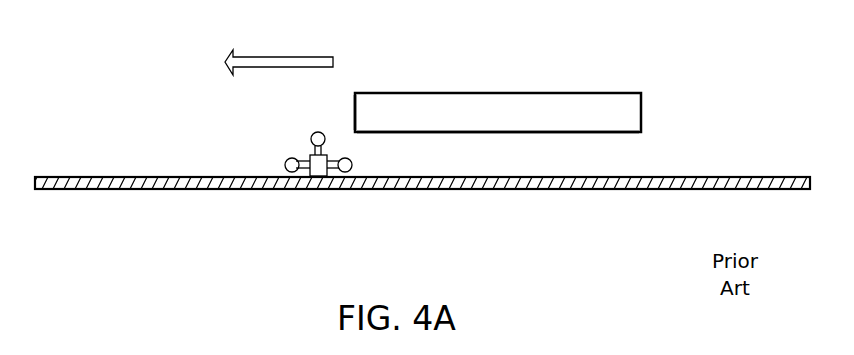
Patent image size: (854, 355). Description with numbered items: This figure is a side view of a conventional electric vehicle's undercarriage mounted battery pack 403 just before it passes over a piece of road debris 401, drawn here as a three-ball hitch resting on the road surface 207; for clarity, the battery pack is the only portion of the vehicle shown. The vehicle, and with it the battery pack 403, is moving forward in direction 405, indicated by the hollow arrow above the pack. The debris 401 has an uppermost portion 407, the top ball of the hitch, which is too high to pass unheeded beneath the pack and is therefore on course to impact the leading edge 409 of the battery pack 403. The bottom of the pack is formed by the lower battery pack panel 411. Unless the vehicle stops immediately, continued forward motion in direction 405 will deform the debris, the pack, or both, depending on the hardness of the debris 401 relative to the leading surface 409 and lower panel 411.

The substrate 207 is at (584, 176).
The road debris 401 is at (318, 178).
The battery pack 403 is at (509, 122).
The direction 405 is at (263, 62).
The uppermost portion 407 is at (316, 129).
The leading edge 409 is at (353, 105).
The lower battery pack panel 411 is at (393, 136).